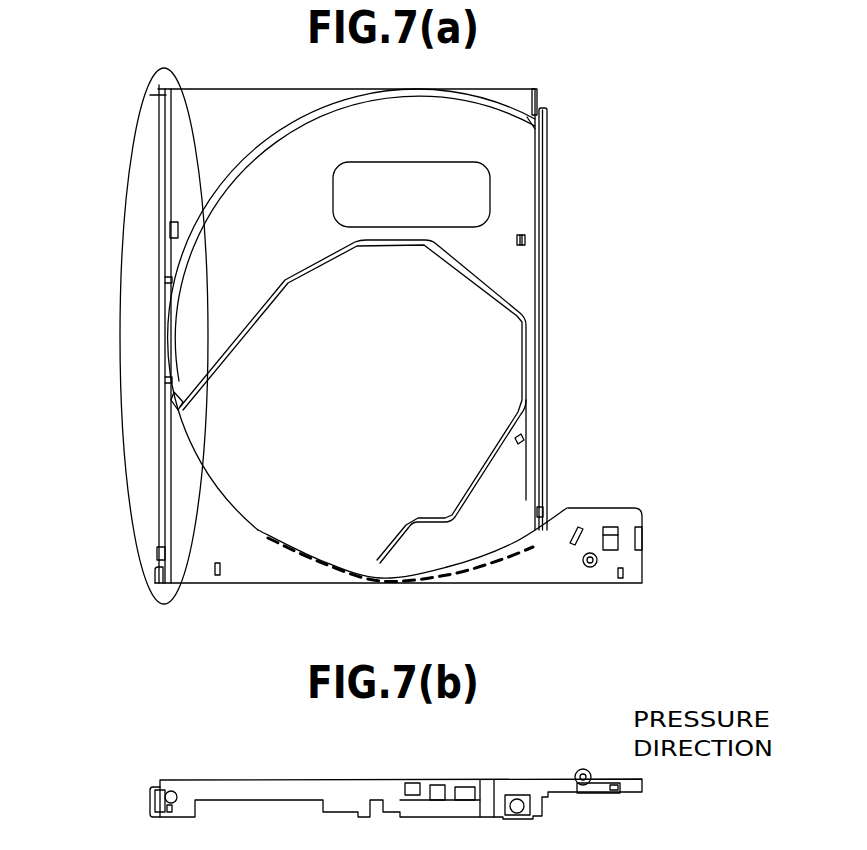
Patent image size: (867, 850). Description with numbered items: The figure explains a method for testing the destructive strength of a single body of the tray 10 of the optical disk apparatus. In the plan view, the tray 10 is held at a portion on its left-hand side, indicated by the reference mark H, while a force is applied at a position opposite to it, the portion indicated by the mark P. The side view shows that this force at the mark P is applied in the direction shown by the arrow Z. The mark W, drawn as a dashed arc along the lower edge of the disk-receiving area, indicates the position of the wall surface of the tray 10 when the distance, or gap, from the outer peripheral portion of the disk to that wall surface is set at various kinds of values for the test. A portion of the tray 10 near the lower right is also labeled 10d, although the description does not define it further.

The holding portion H is at (124, 283).
The tray 10 is at (547, 148).
The chassis side wall portion 10d is at (508, 498).
The force application position P is at (593, 549).
The wall surface position W is at (317, 565).
The force direction arrow Z is at (583, 722).